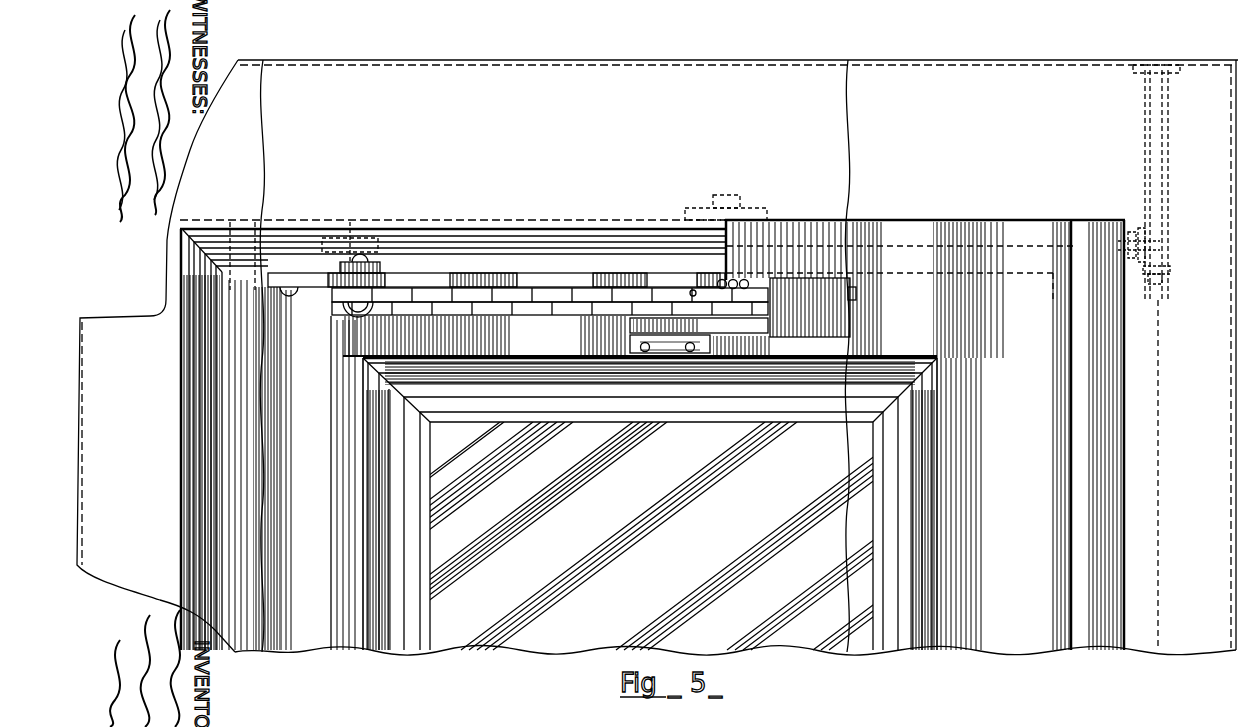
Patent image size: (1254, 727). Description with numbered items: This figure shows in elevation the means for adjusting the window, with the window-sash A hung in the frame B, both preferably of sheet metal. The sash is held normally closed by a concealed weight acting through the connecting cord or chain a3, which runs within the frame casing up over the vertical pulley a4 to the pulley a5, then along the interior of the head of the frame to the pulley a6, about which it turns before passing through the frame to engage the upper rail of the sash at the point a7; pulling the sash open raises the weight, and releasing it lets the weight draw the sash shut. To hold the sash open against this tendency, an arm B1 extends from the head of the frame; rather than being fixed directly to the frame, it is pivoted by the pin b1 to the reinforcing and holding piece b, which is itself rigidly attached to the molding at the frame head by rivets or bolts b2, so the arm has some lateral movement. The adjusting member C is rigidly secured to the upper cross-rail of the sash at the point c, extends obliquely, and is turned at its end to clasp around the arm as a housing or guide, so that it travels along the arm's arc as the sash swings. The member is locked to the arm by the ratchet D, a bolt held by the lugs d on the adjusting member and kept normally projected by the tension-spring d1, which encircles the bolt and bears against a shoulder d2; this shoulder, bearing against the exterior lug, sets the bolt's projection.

The window-sash A is at (452, 435).
The frame B is at (905, 404).
The arm B1 is at (572, 298).
The adjusting member C is at (755, 330).
The point of attachment c is at (668, 347).
The ratchet D is at (697, 287).
The lugs d is at (715, 287).
The tension-spring d1 is at (732, 285).
The shoulder d2 is at (750, 287).
The reinforcing and holding piece b is at (327, 283).
The pin b1 is at (350, 315).
The rivets or bolts b2 is at (291, 315).
The connecting cord or chain a3 is at (1158, 400).
The vertical pulley a4 is at (1168, 280).
The pulley a5 is at (1157, 248).
The pulley a6 is at (372, 242).
The point of engagement a7 is at (343, 215).